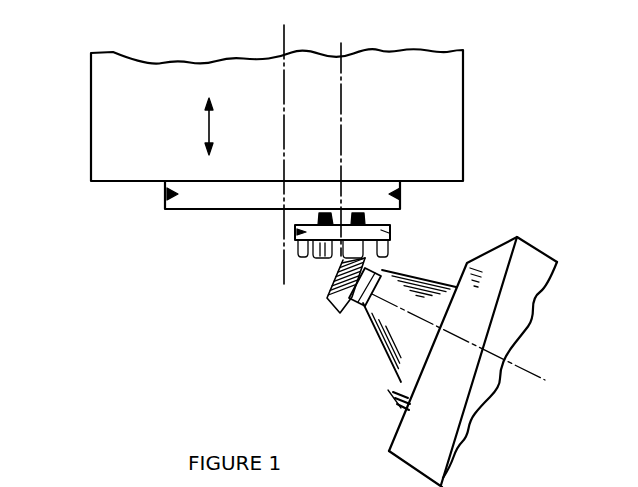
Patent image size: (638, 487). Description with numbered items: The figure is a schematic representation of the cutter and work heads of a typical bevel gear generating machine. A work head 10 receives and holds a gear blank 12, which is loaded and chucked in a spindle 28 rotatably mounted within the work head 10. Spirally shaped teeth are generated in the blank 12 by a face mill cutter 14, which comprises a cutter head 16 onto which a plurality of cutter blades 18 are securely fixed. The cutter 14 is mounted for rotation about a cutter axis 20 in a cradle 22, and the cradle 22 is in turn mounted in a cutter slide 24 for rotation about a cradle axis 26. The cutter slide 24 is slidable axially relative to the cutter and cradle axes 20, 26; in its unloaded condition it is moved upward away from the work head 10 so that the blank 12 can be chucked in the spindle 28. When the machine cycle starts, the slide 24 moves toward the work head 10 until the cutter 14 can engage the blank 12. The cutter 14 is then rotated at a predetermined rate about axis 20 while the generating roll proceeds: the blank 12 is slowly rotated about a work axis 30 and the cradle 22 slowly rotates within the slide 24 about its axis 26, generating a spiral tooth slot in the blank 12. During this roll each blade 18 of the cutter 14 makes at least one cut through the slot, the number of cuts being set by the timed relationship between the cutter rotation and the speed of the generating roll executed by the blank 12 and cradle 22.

The work head 10 is at (534, 281).
The gear blank 12 is at (340, 298).
The face mill cutter 14 is at (292, 268).
The cutter head 16 is at (391, 232).
The cutter blades 18 is at (324, 253).
The cutter axis 20 is at (342, 78).
The cradle 22 is at (187, 198).
The cutter slide 24 is at (112, 142).
The cradle axis 26 is at (280, 60).
The spindle 28 is at (420, 370).
The work axis 30 is at (523, 380).